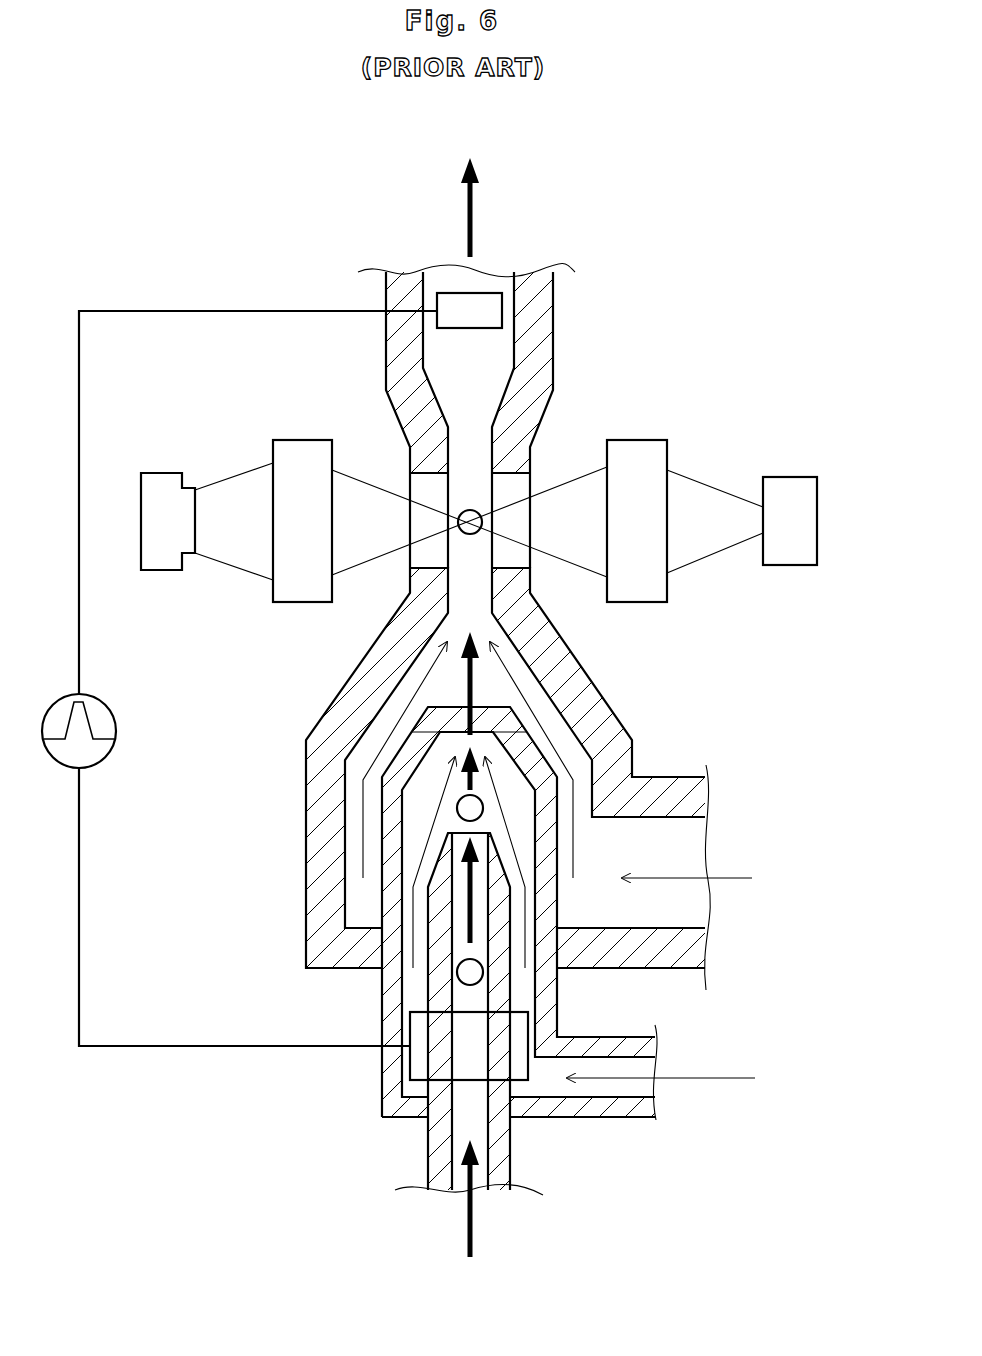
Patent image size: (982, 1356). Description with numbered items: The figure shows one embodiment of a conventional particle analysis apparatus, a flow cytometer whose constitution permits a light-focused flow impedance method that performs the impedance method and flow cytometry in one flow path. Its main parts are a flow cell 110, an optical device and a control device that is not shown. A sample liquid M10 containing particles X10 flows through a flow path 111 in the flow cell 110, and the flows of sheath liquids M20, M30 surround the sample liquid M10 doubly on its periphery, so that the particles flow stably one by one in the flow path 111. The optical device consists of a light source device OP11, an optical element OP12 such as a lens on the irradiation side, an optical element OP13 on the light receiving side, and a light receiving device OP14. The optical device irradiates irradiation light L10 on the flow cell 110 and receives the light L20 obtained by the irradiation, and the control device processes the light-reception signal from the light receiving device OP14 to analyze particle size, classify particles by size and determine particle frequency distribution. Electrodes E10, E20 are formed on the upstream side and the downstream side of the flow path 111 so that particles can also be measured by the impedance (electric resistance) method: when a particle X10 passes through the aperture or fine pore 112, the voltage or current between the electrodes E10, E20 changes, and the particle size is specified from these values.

The flow cell 110 is at (306, 923).
The flow path 111 is at (461, 550).
The aperture (fine pore) 112 is at (510, 708).
The electrode E10 is at (530, 1068).
The electrode E20 is at (490, 293).
The particle X10 is at (457, 980).
The light source device OP11 is at (152, 483).
The optical element on the irradiation side OP12 is at (300, 450).
The optical element on the light receiving side OP13 is at (633, 452).
The light receiving device OP14 is at (783, 490).
The irradiation light L10 is at (212, 557).
The light obtained by the irradiation L20 is at (707, 557).
The sample liquid M10 is at (466, 1224).
The sheath liquid M20 is at (693, 1079).
The sheath liquid M30 is at (725, 879).